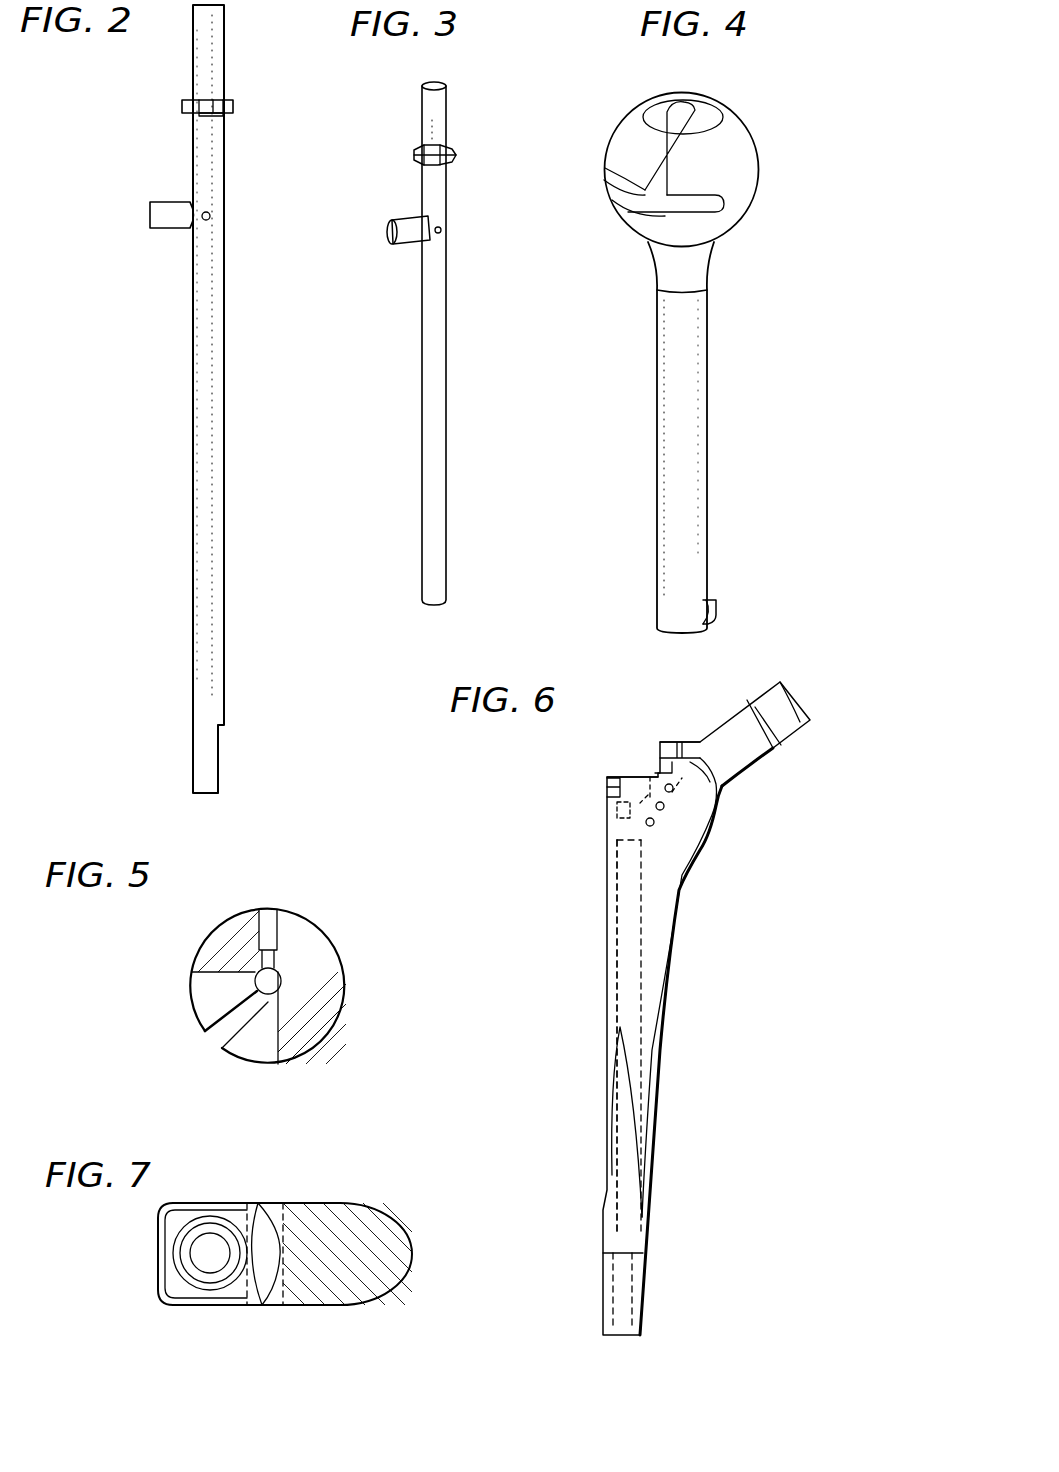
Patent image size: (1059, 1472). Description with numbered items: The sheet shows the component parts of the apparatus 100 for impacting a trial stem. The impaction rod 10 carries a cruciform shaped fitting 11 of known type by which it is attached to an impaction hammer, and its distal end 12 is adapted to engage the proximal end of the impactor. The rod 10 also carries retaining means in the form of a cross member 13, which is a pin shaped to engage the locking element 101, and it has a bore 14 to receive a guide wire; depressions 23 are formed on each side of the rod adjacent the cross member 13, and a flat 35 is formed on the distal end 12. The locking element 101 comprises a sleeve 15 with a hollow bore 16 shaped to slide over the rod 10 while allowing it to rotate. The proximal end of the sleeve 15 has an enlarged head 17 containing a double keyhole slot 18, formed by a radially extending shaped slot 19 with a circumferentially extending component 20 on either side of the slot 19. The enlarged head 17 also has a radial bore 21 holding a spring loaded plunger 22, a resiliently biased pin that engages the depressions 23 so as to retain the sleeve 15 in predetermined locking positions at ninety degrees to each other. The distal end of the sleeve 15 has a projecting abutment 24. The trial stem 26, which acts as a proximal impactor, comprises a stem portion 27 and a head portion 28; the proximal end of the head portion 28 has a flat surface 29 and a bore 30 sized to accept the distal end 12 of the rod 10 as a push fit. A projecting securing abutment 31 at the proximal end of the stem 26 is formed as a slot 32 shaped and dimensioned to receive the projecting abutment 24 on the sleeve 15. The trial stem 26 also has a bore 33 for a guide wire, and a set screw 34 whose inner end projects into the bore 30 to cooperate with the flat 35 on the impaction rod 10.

In FIG. 2, the apparatus 100 is at (125, 132).
In FIG. 2, the impaction rod 10 is at (209, 412).
In FIG. 2, the cruciform shaped fitting 11 is at (233, 107).
In FIG. 3, the cruciform shaped fitting 11 is at (414, 153).
In FIG. 2, the distal end of the impaction rod 12 is at (193, 762).
In FIG. 2, the cross member 13 is at (156, 218).
In FIG. 3, the cross member 13 is at (408, 230).
In FIG. 3, the bore 14 is at (432, 84).
In FIG. 4, the sleeve 15 is at (707, 362).
In FIG. 4, the hollow bore 16 is at (690, 110).
In FIG. 5, the hollow bore 16 is at (281, 984).
In FIG. 4, the enlarged head 17 is at (736, 180).
In FIG. 5, the enlarged head 17 is at (322, 1020).
In FIG. 4, the double keyhole slot 18 is at (614, 186).
In FIG. 5, the double keyhole slot 18 is at (200, 982).
In FIG. 4, the radially extending shaped slot 19 is at (657, 152).
In FIG. 5, the radially extending shaped slot 19 is at (223, 1028).
In FIG. 4, the circumferentially extending component 20 is at (655, 203).
In FIG. 5, the circumferentially extending component 20 is at (208, 1000).
In FIG. 5, the radial bore 21 is at (268, 912).
In FIG. 5, the spring loaded plunger 22 is at (265, 958).
In FIG. 2, the depressions 23 is at (212, 208).
In FIG. 3, the depressions 23 is at (441, 229).
In FIG. 4, the projecting abutment 24 is at (710, 600).
In FIG. 6, the trial stem 26 is at (660, 903).
In FIG. 7, the trial stem 26 is at (352, 1230).
In FIG. 6, the stem portion 27 is at (650, 964).
In FIG. 6, the head portion 28 is at (683, 805).
In FIG. 7, the head portion 28 is at (372, 1292).
In FIG. 6, the flat surface 29 is at (618, 775).
In FIG. 6, the bore 30 is at (625, 820).
In FIG. 7, the bore 30 is at (200, 1256).
In FIG. 6, the projecting securing abutment 31 is at (661, 742).
In FIG. 6, the slot 32 is at (660, 770).
In FIG. 7, the slot 32 is at (263, 1218).
In FIG. 6, the bore 33 is at (630, 887).
In FIG. 6, the set screw 34 is at (608, 790).
In FIG. 2, the flat 35 is at (220, 750).
In FIG. 4, the locking element 101 is at (778, 140).